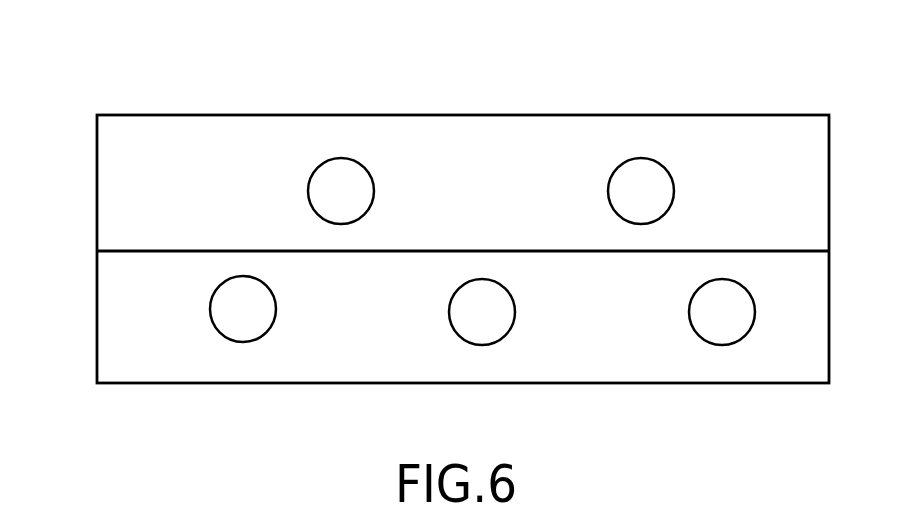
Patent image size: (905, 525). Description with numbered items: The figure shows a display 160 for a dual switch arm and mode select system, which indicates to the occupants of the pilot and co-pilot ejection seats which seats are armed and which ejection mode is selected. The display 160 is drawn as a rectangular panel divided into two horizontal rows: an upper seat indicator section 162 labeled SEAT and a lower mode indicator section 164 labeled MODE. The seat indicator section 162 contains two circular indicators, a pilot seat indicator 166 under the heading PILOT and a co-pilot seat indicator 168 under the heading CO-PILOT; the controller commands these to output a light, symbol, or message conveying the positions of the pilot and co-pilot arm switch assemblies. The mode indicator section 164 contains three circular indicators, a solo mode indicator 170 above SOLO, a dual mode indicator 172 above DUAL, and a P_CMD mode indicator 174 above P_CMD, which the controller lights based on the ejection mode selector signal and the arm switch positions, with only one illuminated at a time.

The display 160 is at (80, 95).
The seat indicator section 162 is at (147, 140).
The mode indicator section 164 is at (152, 368).
The pilot seat indicator 166 is at (360, 189).
The co-pilot seat indicator 168 is at (659, 194).
The solo mode indicator 170 is at (262, 315).
The dual mode indicator 172 is at (500, 319).
The P_CMD mode indicator 174 is at (735, 319).